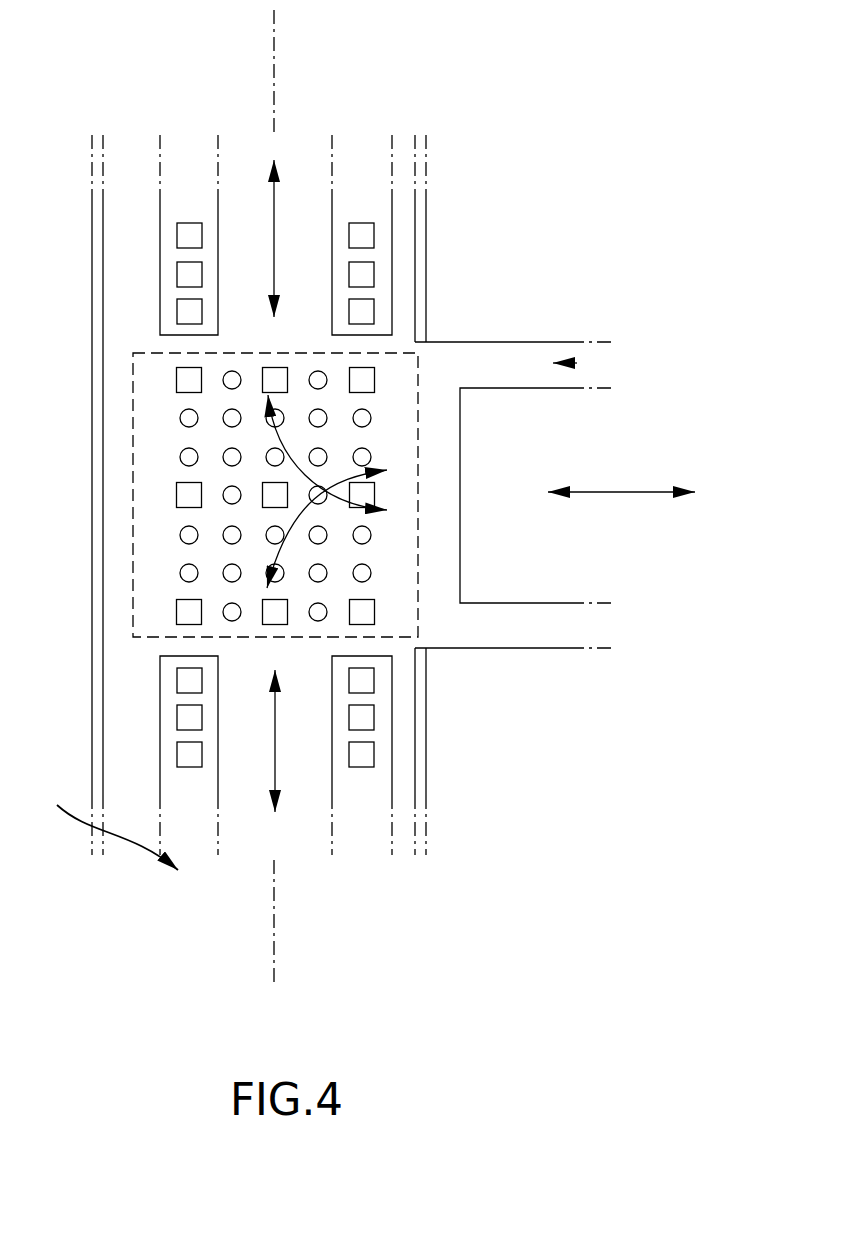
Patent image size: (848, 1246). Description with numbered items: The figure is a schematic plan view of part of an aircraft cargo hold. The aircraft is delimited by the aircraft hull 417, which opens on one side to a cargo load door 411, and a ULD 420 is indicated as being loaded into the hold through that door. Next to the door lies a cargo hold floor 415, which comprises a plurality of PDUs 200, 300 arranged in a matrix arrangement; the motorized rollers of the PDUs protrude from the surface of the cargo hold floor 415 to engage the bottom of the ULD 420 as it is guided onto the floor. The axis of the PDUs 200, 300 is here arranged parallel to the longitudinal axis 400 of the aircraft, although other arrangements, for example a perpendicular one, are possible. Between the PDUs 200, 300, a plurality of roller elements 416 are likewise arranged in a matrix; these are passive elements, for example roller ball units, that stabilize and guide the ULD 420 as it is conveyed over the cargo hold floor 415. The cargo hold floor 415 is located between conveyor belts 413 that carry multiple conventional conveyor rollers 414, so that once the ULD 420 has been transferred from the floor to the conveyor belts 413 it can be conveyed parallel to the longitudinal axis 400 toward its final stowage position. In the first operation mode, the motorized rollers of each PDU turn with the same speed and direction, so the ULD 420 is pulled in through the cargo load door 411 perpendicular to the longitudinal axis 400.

The longitudinal axis 400 is at (273, 43).
The cargo load door 411 is at (577, 363).
The conveyor belts 413 is at (159, 267).
The conveyor rollers 414 is at (192, 235).
The cargo hold floor 415 is at (418, 404).
The roller elements 416 is at (371, 456).
The aircraft hull 417 is at (472, 342).
The ULD 420 is at (567, 603).
The PDU 200 is at (371, 496).
The PDU 300 is at (375, 379).